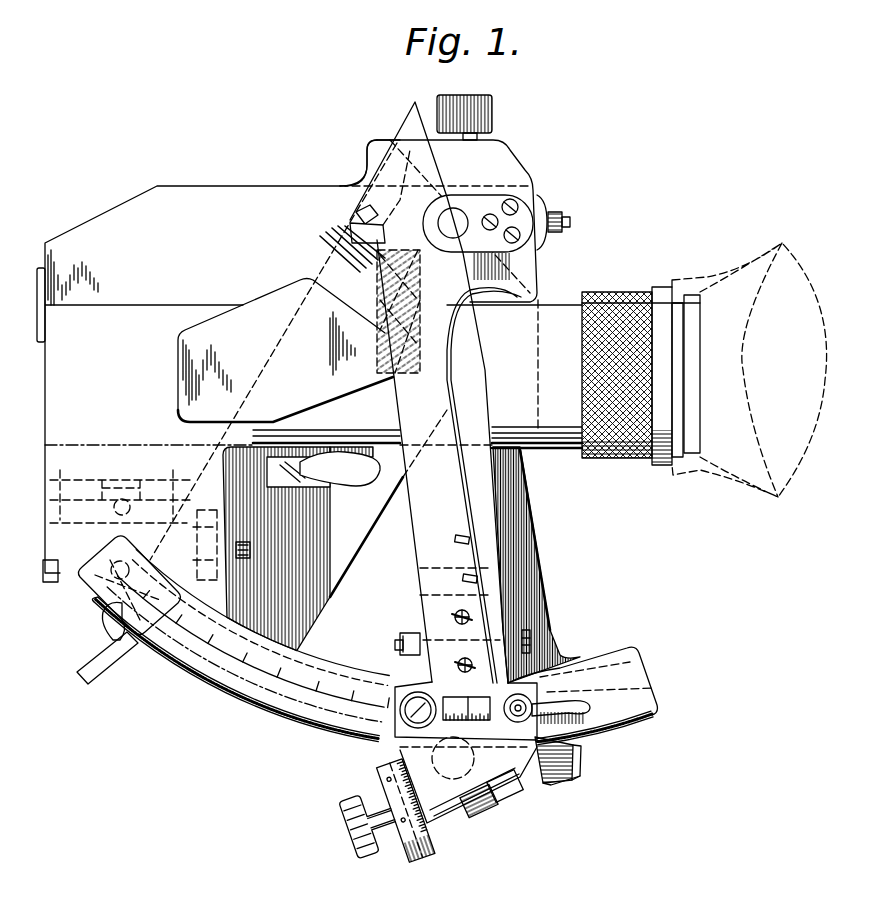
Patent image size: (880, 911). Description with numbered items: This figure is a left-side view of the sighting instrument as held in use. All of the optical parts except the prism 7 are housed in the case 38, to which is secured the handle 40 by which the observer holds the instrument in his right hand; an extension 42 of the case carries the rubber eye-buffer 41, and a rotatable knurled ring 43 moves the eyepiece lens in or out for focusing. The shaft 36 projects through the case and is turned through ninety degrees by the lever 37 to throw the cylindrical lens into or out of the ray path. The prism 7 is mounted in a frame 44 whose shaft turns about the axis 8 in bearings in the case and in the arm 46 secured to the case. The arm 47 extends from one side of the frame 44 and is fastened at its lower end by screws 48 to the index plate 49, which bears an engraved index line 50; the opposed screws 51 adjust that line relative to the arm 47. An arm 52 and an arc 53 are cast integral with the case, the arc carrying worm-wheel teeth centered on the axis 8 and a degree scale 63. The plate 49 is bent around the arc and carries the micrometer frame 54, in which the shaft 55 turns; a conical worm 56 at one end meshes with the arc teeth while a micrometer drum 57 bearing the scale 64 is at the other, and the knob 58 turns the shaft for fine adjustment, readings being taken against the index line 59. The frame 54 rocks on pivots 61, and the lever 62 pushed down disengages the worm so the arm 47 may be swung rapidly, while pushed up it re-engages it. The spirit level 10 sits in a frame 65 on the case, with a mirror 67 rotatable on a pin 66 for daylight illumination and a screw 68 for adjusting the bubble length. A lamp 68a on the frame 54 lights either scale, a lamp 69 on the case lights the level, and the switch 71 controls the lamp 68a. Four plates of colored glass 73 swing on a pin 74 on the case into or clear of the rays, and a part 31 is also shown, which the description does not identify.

The prism 7 is at (397, 168).
The axis 8 is at (463, 222).
The spirit level 10 is at (110, 546).
The adjusting knob 31 is at (492, 122).
The shaft 36 is at (292, 426).
The lever 37 is at (345, 486).
The case 38 is at (165, 197).
The handle 40 is at (317, 618).
The rubber eye-buffer 41 is at (778, 497).
The extension 42 is at (560, 308).
The knurled ring 43 is at (630, 460).
The frame 44 is at (415, 102).
The arm 46 is at (530, 220).
The arm 47 is at (418, 550).
The screws 48 is at (458, 665).
The index plate 49 is at (587, 680).
The index line 50 is at (466, 714).
The opposed screws 51 is at (400, 645).
The arm 52 is at (547, 615).
The arc 53 is at (336, 670).
The micrometer frame 54 is at (537, 787).
The shaft 55 is at (580, 753).
The conical worm 56 is at (580, 772).
The micrometer drum 57 is at (380, 783).
The knob 58 is at (358, 838).
The index line 59 is at (452, 825).
The pivots 61 is at (385, 725).
The lever 62 is at (593, 708).
The scale 63 is at (233, 663).
The scale 64 is at (425, 853).
The frame 65 is at (118, 480).
The pin 66 is at (157, 652).
The mirror 67 is at (118, 656).
The screw 68 is at (250, 552).
The lamp 68a is at (475, 808).
The lamp 69 is at (108, 622).
The switch 71 is at (572, 224).
The plates of colored glass 73 is at (350, 232).
The pin 74 is at (412, 362).